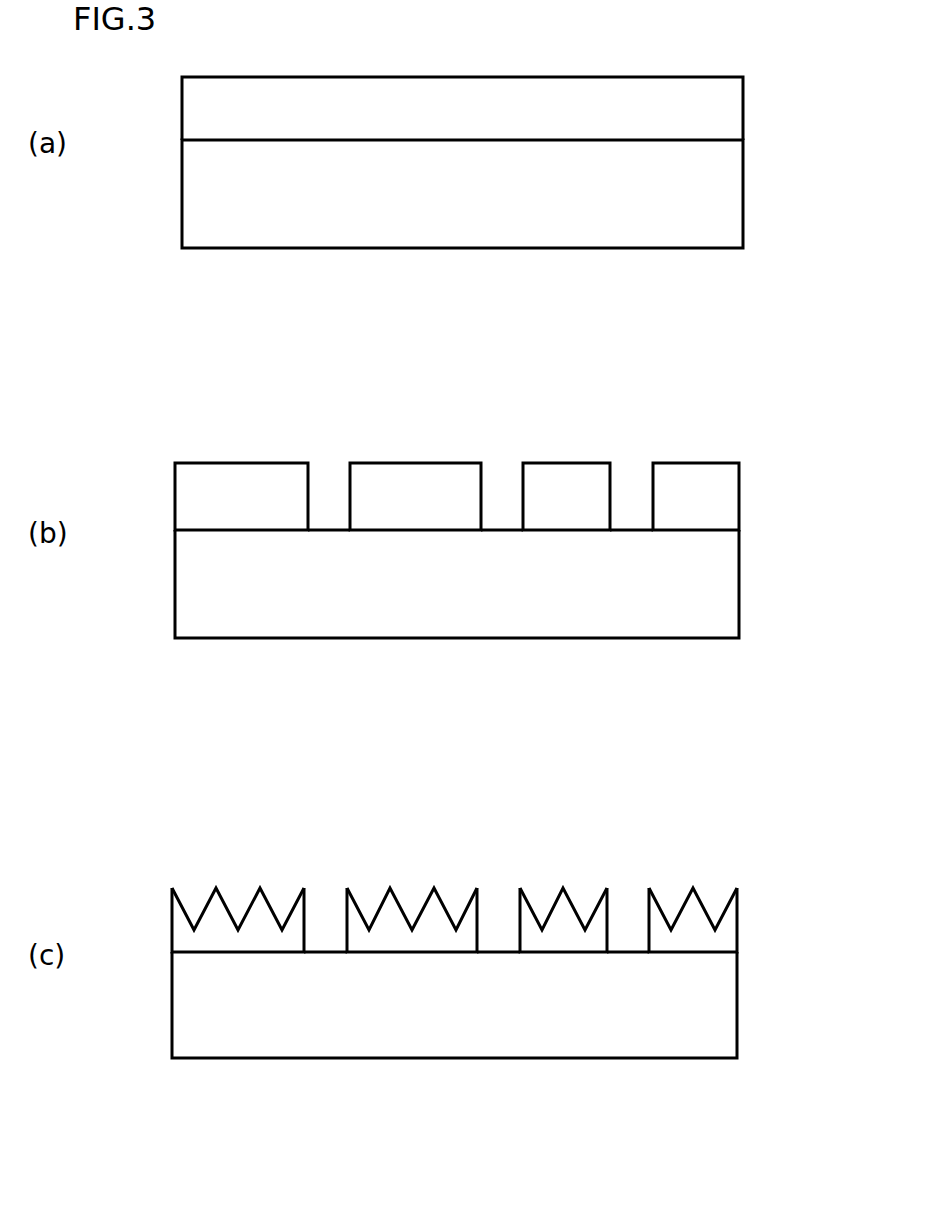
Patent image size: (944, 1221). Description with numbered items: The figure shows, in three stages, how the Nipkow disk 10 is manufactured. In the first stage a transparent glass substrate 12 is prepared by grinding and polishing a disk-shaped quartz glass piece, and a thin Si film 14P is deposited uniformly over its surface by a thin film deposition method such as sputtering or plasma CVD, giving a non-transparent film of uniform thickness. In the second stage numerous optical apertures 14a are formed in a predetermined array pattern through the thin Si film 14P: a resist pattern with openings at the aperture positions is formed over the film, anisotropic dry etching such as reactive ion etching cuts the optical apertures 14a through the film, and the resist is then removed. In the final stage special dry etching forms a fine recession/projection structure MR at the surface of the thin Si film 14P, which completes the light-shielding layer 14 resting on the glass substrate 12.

The Nipkow disk 10 is at (800, 884).
The glass substrate 12 is at (724, 208).
The light-shielding layer 14 is at (720, 928).
The thin Si film 14P is at (724, 114).
The optical apertures 14a is at (307, 498).
The fine recession/projection structure MR is at (183, 897).